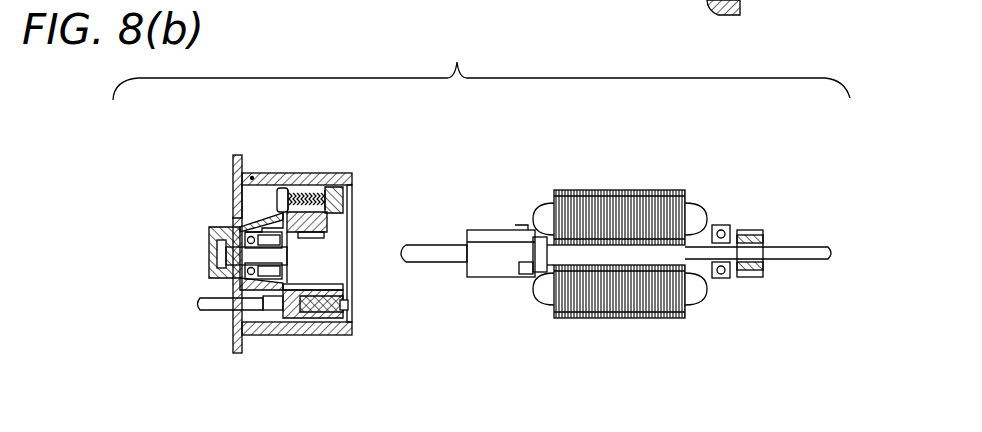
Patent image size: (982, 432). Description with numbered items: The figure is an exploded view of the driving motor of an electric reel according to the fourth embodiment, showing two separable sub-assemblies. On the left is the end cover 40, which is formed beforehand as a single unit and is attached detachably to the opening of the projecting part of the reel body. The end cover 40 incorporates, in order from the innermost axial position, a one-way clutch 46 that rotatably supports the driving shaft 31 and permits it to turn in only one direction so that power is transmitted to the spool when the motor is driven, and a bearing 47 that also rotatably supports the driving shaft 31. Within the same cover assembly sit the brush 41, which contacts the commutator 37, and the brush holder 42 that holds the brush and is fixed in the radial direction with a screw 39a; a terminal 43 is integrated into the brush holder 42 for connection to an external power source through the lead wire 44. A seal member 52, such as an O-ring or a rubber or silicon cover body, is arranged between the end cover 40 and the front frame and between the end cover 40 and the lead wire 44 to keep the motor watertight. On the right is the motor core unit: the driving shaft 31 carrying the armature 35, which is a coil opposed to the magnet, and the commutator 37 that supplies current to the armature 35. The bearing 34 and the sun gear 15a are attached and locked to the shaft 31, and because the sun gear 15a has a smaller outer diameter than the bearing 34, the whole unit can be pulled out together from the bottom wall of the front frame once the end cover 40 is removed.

The sun gear 15a is at (753, 278).
The driving shaft 31 is at (441, 262).
The bearing 34 is at (722, 226).
The armature 35 is at (656, 190).
The commutator 37 is at (503, 247).
The screw 39a is at (257, 190).
The end cover 40 is at (233, 346).
The brush 41 is at (320, 335).
The brush holder 42 is at (307, 213).
The terminal 43 is at (290, 335).
The lead wire 44 is at (200, 305).
The one-way clutch 46 is at (265, 232).
The bearing 47 is at (215, 278).
The seal member 52 is at (252, 176).